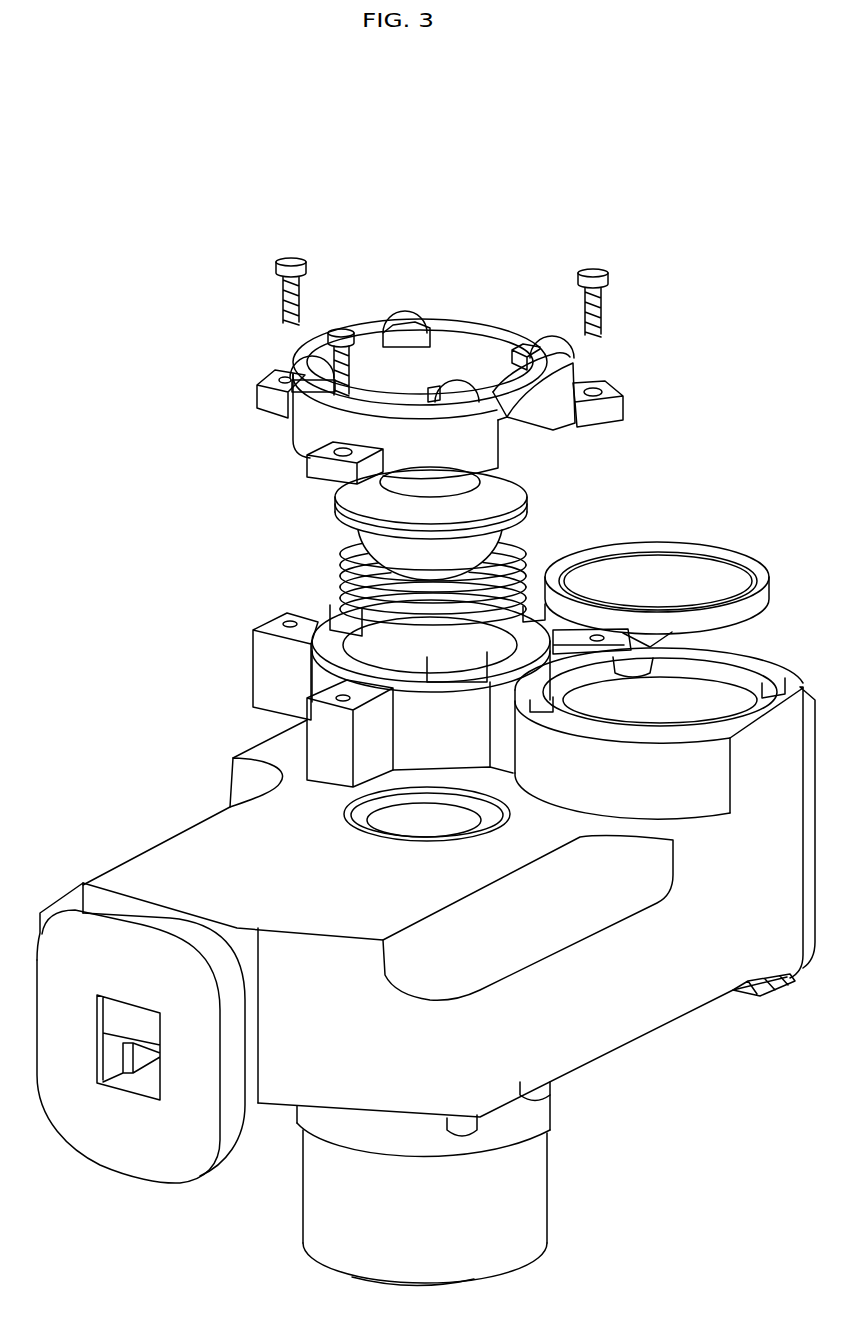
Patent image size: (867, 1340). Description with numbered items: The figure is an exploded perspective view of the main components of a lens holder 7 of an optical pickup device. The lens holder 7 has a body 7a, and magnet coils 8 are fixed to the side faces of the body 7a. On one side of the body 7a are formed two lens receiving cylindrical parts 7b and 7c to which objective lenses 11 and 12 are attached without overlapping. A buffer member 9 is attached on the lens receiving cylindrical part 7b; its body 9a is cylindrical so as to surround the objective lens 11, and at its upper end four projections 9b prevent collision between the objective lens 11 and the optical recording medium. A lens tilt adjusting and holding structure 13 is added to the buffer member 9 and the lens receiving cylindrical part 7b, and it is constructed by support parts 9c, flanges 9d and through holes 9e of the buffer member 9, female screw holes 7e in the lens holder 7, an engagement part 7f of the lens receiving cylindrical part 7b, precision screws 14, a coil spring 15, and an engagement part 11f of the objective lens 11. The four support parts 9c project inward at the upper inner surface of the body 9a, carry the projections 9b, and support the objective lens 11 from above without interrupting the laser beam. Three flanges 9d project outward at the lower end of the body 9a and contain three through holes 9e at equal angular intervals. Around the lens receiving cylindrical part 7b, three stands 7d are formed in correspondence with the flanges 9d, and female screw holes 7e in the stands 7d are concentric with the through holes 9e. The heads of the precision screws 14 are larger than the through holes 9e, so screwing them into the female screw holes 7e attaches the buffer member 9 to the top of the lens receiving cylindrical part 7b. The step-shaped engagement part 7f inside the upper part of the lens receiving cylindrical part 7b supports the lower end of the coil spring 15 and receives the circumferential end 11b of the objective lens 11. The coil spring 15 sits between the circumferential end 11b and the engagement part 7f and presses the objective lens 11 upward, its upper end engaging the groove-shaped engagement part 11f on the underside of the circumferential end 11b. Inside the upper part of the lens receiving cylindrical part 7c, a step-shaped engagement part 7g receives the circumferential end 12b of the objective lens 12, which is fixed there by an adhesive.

The lens holder 7 is at (163, 840).
The body 7a is at (233, 833).
The lens receiving cylindrical part 7b is at (323, 677).
The lens receiving cylindrical part 7c is at (677, 800).
The stand 7d is at (257, 654).
The female screw hole 7e is at (290, 622).
The engagement part 7f is at (333, 610).
The engagement part 7g is at (740, 684).
The magnet coil 8 is at (110, 1163).
The buffer member 9 is at (283, 437).
The body 9a is at (470, 318).
The projection 9b is at (410, 304).
The support part 9c is at (433, 333).
The flange 9d is at (258, 390).
The through hole 9e is at (283, 377).
The objective lens 11 is at (515, 468).
The circumferential end 11b is at (525, 502).
The engagement part 11f is at (508, 520).
The objective lens 12 is at (730, 550).
The circumferential end 12b is at (755, 618).
The lens tilt adjusting and holding structure 13 is at (195, 514).
The precision screw 14 is at (291, 257).
The coil spring 15 is at (340, 567).